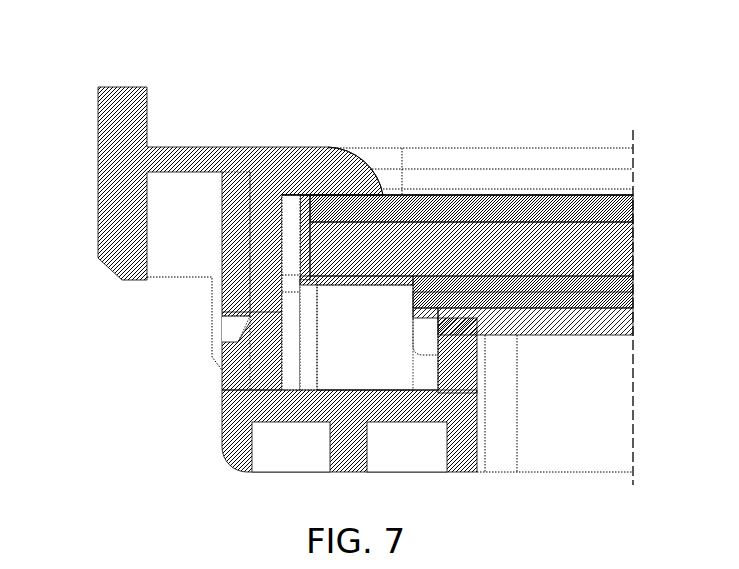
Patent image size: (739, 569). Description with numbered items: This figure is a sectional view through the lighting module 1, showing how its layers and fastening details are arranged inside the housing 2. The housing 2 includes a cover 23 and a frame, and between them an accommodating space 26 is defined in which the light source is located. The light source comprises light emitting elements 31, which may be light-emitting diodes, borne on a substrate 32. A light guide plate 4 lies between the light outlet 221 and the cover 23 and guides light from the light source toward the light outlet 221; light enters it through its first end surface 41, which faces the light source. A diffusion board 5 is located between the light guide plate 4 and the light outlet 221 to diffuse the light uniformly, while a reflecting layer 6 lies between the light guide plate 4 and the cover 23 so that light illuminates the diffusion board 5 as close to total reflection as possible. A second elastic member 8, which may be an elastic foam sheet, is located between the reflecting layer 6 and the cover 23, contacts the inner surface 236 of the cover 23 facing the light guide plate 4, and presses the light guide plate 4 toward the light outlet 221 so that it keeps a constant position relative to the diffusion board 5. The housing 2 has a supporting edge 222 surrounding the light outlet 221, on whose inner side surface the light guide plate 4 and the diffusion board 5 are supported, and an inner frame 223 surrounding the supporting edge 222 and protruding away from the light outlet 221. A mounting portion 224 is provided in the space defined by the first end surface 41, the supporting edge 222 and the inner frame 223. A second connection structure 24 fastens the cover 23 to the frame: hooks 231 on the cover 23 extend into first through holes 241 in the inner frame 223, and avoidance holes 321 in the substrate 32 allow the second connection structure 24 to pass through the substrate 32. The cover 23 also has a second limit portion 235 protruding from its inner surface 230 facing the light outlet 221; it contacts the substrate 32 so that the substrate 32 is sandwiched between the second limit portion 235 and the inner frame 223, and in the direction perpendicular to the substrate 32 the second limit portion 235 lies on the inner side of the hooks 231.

The lighting module 1 is at (108, 340).
The housing 2 is at (238, 153).
The light guide plate 4 is at (627, 247).
The diffusion board 5 is at (627, 208).
The reflecting layer 6 is at (627, 276).
The second elastic member 8 is at (627, 293).
The cover 23 is at (240, 412).
The second connection structure 24 is at (216, 329).
The accommodating space 26 is at (394, 303).
The light emitting elements 31 is at (283, 247).
The substrate 32 is at (258, 222).
The first end surface 41 is at (310, 240).
The light outlet 221 is at (462, 162).
The supporting edge 222 is at (343, 192).
The inner frame 223 is at (233, 252).
The mounting portion 224 is at (293, 215).
The inner surface 230 is at (330, 390).
The hooks 231 is at (233, 343).
The second limit portion 235 is at (298, 348).
The inner surface 236 is at (627, 310).
The first through holes 241 is at (236, 336).
The avoidance holes 321 is at (258, 312).